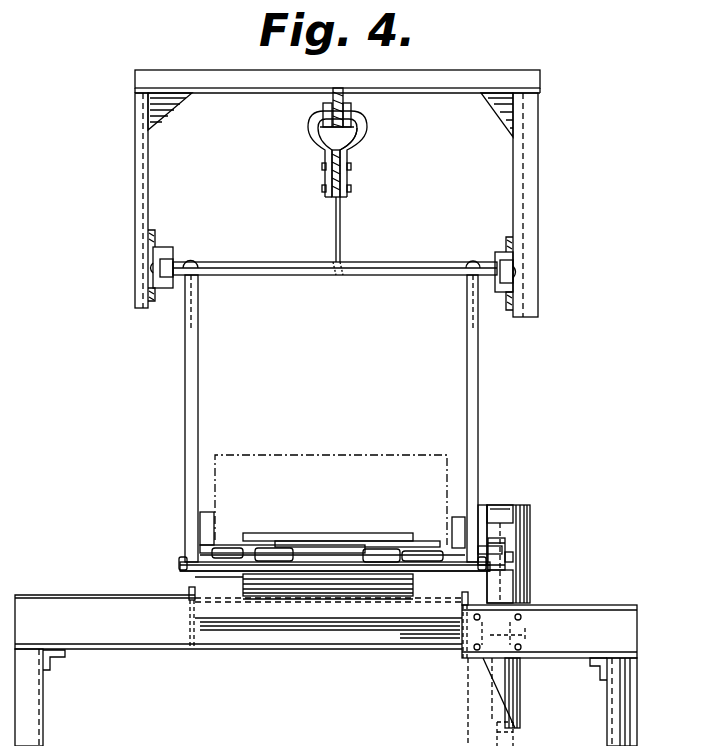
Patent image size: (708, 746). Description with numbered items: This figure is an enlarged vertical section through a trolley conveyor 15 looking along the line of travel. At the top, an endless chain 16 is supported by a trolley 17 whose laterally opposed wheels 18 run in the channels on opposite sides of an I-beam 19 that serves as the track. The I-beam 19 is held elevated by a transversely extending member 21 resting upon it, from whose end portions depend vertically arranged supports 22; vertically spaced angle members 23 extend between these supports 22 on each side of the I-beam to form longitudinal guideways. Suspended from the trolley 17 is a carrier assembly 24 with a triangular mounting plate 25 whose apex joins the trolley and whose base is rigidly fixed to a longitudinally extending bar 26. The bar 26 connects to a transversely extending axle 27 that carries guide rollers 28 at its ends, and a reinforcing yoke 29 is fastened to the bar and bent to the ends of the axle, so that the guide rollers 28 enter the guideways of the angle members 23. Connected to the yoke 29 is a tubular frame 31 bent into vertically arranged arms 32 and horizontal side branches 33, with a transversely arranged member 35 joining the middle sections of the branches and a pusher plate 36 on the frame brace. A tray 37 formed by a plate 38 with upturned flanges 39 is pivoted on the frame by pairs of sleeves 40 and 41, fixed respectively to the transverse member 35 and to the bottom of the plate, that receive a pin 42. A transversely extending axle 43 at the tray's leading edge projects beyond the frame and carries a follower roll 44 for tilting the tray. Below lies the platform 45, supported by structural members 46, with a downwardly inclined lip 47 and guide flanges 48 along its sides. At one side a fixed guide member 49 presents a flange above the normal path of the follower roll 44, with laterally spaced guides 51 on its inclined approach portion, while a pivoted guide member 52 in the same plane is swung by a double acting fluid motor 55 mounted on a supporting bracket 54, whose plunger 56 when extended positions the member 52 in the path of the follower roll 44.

The trolley conveyor 15 is at (312, 138).
The endless chain 16 is at (347, 176).
The trolley 17 is at (358, 140).
The wheels 18 is at (323, 110).
The I-beam 19 is at (340, 88).
The transversely extending member 21 is at (444, 87).
The vertically arranged support 22 is at (135, 176).
The angle members 23 is at (156, 232).
The carrier assembly 24 is at (333, 423).
The triangular mounting plate 25 is at (341, 228).
The longitudinally extending bar 26 is at (332, 278).
The transversely extending axle 27 is at (425, 276).
The guide rollers 28 is at (173, 250).
The reinforcing yoke 29 is at (197, 261).
The tubular frame 31 is at (236, 573).
The vertically arranged arms 32 is at (185, 403).
The side branches 33 is at (179, 565).
The transversely arranged member 35 is at (338, 575).
The pusher plate 36 is at (396, 600).
The tray 37 is at (350, 541).
The plate 38 is at (293, 533).
The upturned flanges 39 is at (212, 512).
The sleeves 40 is at (228, 548).
The sleeves 41 is at (270, 548).
The pin 42 is at (320, 545).
The transversely extending axle 43 is at (484, 505).
The follower roll 44 is at (505, 548).
The platform 45 is at (266, 598).
The structural members 46 is at (43, 716).
The downwardly inclined lip 47 is at (330, 614).
The guide flanges 48 is at (189, 589).
The guide member 49 is at (500, 505).
The guides 51 is at (530, 510).
The guide member 52 is at (513, 585).
The supporting bracket 54 is at (468, 700).
The double acting fluid motor 55 is at (520, 689).
The plunger 56 is at (513, 556).